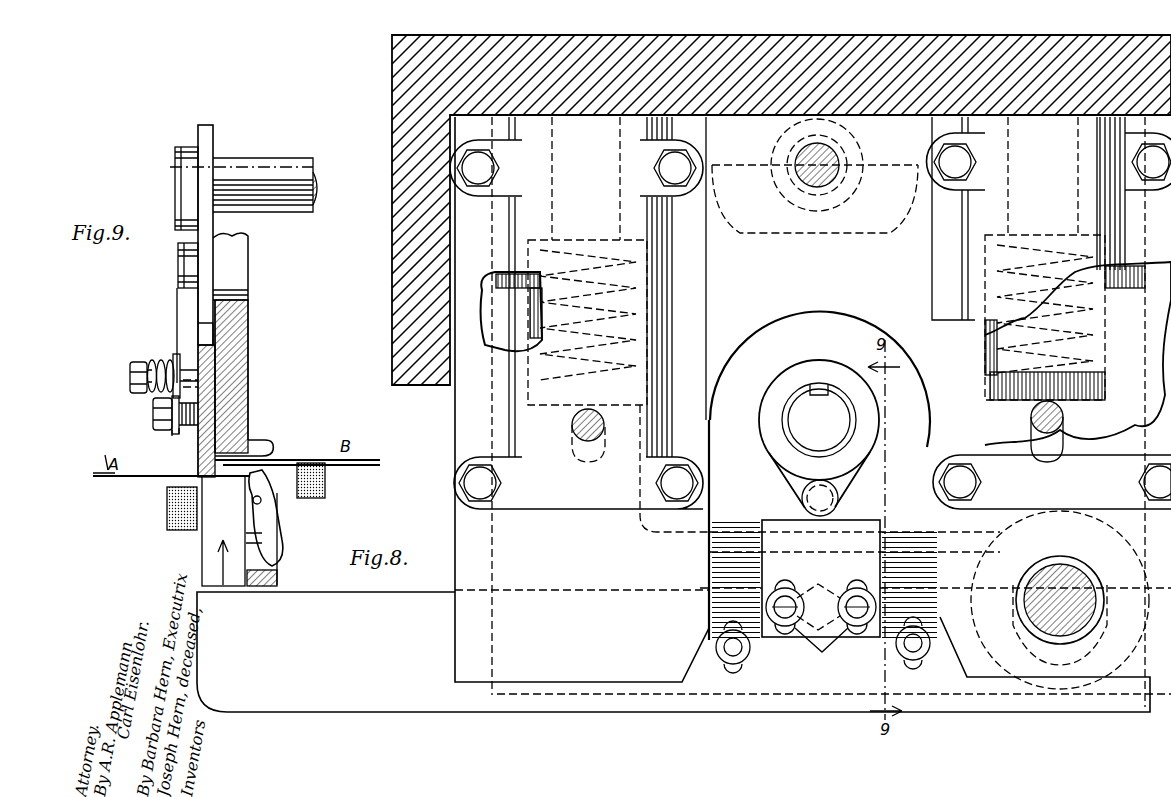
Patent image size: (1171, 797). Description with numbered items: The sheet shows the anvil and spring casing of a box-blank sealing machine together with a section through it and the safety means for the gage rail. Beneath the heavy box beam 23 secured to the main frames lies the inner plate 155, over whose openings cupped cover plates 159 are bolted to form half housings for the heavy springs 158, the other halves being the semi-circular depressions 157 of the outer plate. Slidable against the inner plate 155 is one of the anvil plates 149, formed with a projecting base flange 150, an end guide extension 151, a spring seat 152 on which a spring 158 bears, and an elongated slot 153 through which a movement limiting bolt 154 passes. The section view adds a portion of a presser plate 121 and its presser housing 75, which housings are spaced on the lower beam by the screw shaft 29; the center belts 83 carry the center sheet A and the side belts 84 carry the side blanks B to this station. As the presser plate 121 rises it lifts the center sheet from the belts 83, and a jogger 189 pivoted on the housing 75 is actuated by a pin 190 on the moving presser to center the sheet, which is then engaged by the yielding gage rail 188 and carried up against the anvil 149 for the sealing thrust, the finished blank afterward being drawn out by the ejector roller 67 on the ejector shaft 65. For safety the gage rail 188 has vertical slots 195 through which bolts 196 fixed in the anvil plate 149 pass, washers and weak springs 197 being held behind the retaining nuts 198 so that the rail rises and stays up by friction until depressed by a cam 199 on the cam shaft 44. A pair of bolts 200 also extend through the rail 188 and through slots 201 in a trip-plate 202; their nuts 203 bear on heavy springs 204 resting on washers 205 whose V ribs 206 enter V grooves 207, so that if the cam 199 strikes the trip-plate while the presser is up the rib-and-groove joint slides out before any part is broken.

In FIG. 8, the box beam 23 is at (922, 60).
In FIG. 8, the screw shaft 29 is at (835, 178).
In FIG. 8, the cam shaft 44 is at (819, 420).
In FIG. 9, the cam shaft 44 is at (305, 214).
In FIG. 8, the ejector shaft 65 is at (1050, 585).
In FIG. 8, the ejector roller 67 is at (1123, 542).
In FIG. 9, the presser housing 75 is at (280, 576).
In FIG. 9, the center belt 83 is at (166, 504).
In FIG. 9, the side belt 84 is at (326, 490).
In FIG. 9, the presser plate 121 is at (223, 531).
In FIG. 8, the anvil plate 149 is at (735, 542).
In FIG. 9, the anvil plate 149 is at (250, 296).
In FIG. 9, the base flange 150 is at (262, 450).
In FIG. 8, the end guide extension 151 is at (833, 353).
In FIG. 8, the spring seat 152 is at (816, 320).
In FIG. 8, the elongated slot 153 is at (572, 456).
In FIG. 8, the movement limiting bolt 154 is at (572, 429).
In FIG. 8, the inner plate 155 is at (800, 412).
In FIG. 8, the semi-circular depression 157 is at (498, 342).
In FIG. 8, the heavy spring 158 is at (500, 355).
In FIG. 8, the cupped cover plate 159 is at (810, 321).
In FIG. 8, the gage rail 188 is at (673, 651).
In FIG. 9, the gage rail 188 is at (200, 460).
In FIG. 9, the jogger 189 is at (262, 478).
In FIG. 9, the pin 190 is at (265, 538).
In FIG. 8, the vertical slot 195 is at (722, 628).
In FIG. 9, the vertical slot 195 is at (252, 430).
In FIG. 8, the bolt 196 is at (716, 642).
In FIG. 9, the bolt 196 is at (152, 414).
In FIG. 9, the weak spring 197 is at (176, 432).
In FIG. 8, the retaining nut 198 is at (738, 665).
In FIG. 9, the retaining nut 198 is at (150, 404).
In FIG. 8, the cam 199 is at (780, 464).
In FIG. 9, the cam 199 is at (213, 224).
In FIG. 8, the safety bolt 200 is at (772, 598).
In FIG. 9, the safety bolt 200 is at (129, 378).
In FIG. 8, the slot 201 is at (787, 585).
In FIG. 9, the slot 201 is at (176, 340).
In FIG. 8, the trip-plate 202 is at (856, 535).
In FIG. 9, the trip-plate 202 is at (250, 313).
In FIG. 8, the nut 203 is at (821, 648).
In FIG. 9, the nut 203 is at (130, 368).
In FIG. 9, the heavy spring 204 is at (150, 362).
In FIG. 8, the washer 205 is at (819, 616).
In FIG. 9, the washer 205 is at (172, 357).
In FIG. 8, the V rib 206 is at (821, 583).
In FIG. 9, the V rib 206 is at (246, 348).
In FIG. 9, the V groove 207 is at (212, 372).